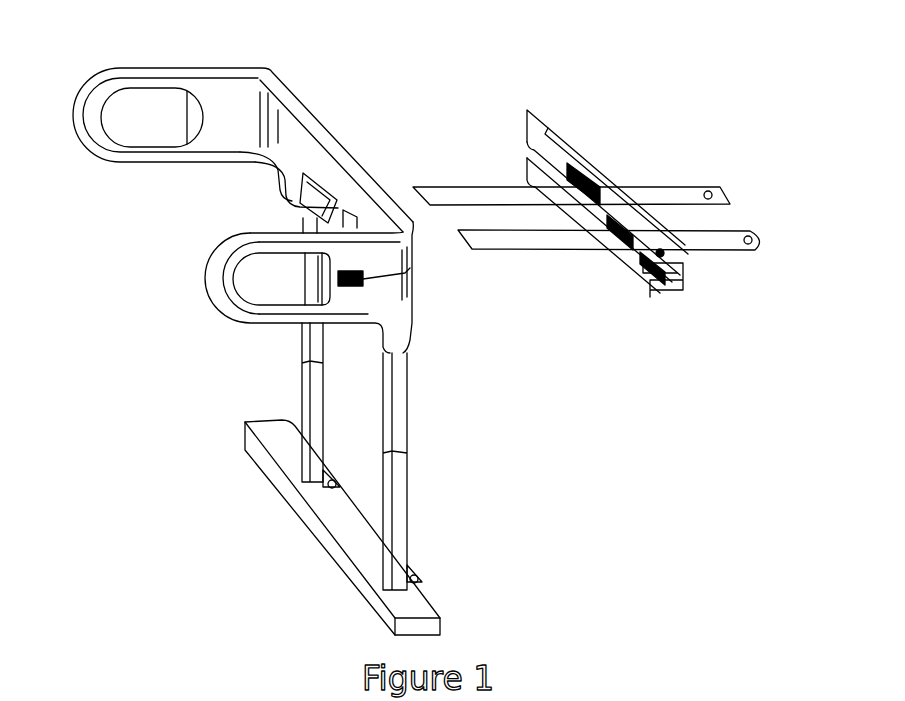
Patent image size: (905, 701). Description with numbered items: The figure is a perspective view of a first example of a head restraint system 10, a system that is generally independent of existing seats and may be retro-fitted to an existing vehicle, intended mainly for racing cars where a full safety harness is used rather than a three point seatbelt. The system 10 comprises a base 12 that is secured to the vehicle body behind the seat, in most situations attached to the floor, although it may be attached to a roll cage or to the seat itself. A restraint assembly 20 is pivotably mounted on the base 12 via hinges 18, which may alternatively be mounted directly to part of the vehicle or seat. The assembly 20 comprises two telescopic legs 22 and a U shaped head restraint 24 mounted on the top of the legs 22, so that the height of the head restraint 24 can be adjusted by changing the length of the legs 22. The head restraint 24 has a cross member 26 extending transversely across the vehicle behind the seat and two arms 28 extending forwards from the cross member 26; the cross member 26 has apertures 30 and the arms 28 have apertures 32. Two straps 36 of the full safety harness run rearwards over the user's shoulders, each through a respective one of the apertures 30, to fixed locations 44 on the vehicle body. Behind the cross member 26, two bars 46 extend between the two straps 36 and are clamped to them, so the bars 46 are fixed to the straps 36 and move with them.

The head restraint system 10 is at (537, 66).
The base 12 is at (432, 630).
The hinges 18 is at (345, 489).
The restraint assembly 20 is at (433, 350).
The telescopic legs 22 is at (408, 409).
The U shaped head restraint 24 is at (355, 88).
The cross member 26 is at (322, 194).
The arms 28 is at (265, 222).
The apertures 30 is at (353, 222).
The apertures 32 is at (158, 101).
The straps 36 is at (688, 192).
The fixed locations 44 is at (733, 199).
The bars 46 is at (592, 147).